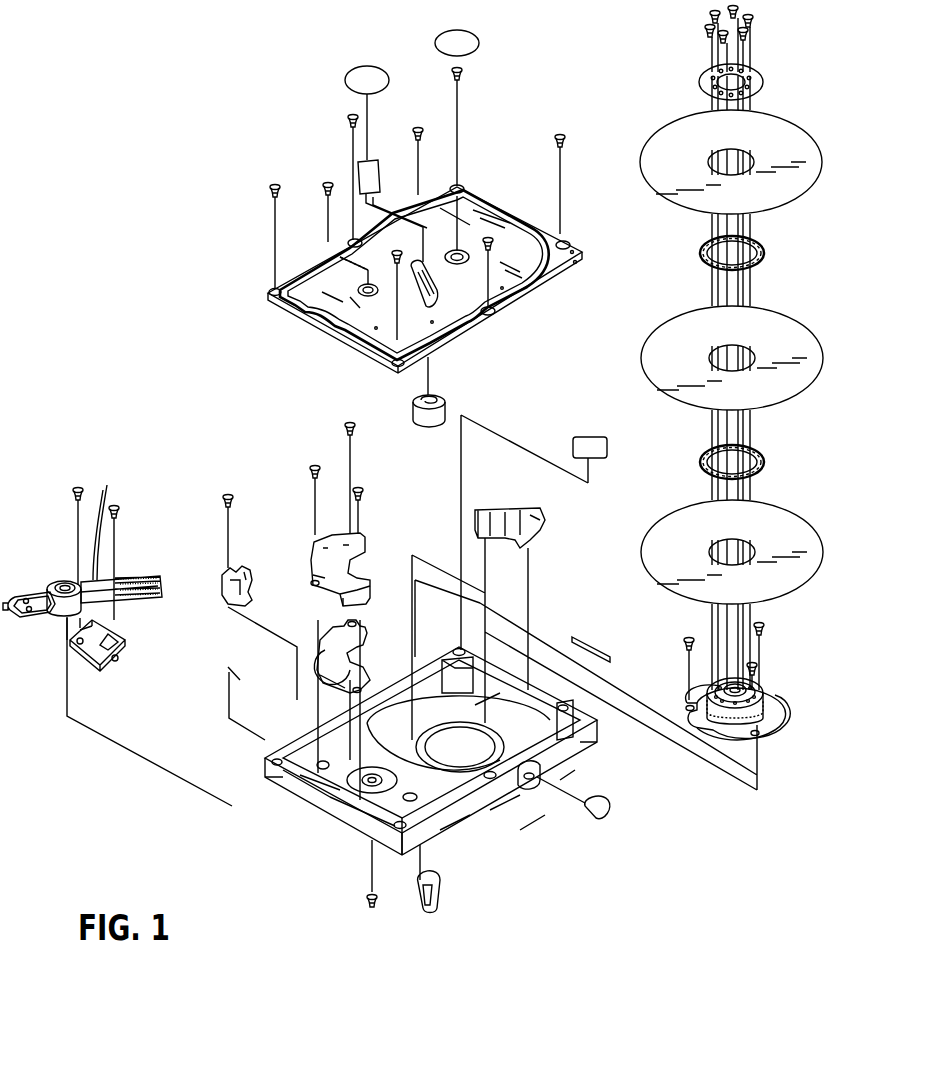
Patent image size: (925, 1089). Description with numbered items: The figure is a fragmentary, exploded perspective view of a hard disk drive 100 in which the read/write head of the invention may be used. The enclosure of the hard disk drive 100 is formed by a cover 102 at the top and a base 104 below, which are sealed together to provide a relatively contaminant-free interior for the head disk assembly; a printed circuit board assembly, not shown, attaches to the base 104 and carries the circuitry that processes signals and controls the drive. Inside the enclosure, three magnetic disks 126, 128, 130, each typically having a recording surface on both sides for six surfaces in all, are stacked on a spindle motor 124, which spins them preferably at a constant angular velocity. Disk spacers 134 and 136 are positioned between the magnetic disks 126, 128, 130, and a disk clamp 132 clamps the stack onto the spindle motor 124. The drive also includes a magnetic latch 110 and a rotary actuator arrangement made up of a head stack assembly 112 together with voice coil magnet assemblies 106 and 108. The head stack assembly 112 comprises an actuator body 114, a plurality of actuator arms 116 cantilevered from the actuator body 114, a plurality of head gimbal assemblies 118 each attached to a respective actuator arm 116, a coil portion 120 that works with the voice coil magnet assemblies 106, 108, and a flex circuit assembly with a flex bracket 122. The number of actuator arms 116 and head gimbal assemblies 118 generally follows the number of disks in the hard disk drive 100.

The hard disk drive 100 is at (153, 260).
The cover 102 is at (567, 263).
The base 104 is at (477, 827).
The voice coil magnet assembly 106 is at (311, 554).
The voice coil magnet assembly 108 is at (327, 658).
The magnetic latch 110 is at (245, 597).
The head stack assembly 112 is at (91, 570).
The actuator body 114 is at (60, 582).
The actuator arms 116 is at (110, 523).
The head gimbal assemblies 118 is at (150, 576).
The coil portion 120 is at (27, 623).
The flex bracket 122 is at (122, 638).
The spindle motor 124 is at (785, 708).
The magnetic disk 126 is at (653, 130).
The magnetic disk 128 is at (655, 333).
The magnetic disk 130 is at (655, 530).
The disk clamp 132 is at (703, 73).
The disk spacer 134 is at (702, 245).
The disk spacer 136 is at (703, 455).